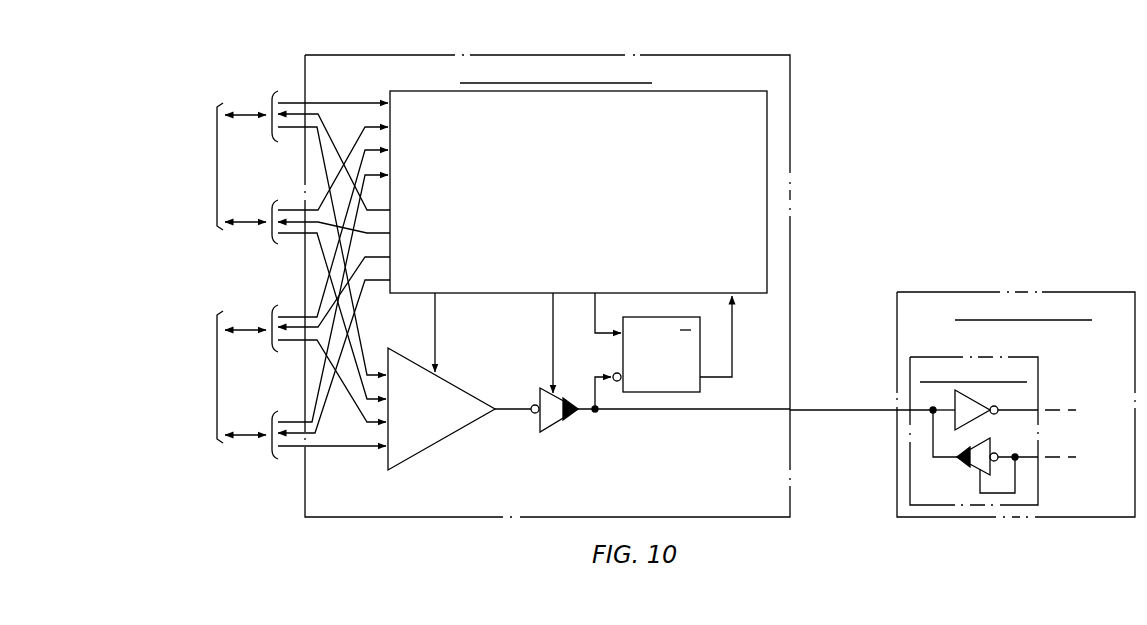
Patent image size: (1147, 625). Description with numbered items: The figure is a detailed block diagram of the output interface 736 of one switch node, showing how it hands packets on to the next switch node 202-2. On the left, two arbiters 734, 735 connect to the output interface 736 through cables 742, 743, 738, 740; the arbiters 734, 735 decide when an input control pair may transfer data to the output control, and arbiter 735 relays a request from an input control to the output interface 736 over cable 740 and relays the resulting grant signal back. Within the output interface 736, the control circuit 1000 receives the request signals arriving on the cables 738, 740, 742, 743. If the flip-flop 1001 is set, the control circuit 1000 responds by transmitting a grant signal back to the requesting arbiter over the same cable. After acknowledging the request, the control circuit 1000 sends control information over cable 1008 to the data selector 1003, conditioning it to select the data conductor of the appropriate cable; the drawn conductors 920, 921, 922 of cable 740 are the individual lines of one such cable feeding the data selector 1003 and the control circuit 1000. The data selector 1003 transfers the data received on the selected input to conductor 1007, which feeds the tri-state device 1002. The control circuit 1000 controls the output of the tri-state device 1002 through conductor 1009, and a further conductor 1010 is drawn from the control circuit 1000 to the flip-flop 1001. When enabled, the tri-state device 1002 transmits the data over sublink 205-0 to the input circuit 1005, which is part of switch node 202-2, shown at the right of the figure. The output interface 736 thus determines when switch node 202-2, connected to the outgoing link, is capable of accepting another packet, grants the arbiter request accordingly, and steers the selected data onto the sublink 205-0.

The output interface 736 is at (588, 55).
The control circuit 1000 is at (677, 91).
The arbiter 734 is at (174, 166).
The arbiter 735 is at (174, 377).
The cable 742 is at (245, 102).
The cable 743 is at (245, 218).
The cable 738 is at (245, 320).
The cable 740 is at (245, 430).
The request line 920 is at (285, 415).
The grant line 921 is at (322, 425).
The data line 922 is at (285, 450).
The data selector 1003 is at (433, 442).
The cable 1008 is at (437, 318).
The conductor 1009 is at (548, 352).
The conductor 1007 is at (510, 412).
The tri-state device 1002 is at (550, 425).
The flip-flop 1001 is at (700, 392).
The reset line 1010 is at (597, 306).
The sublink 205-0 is at (842, 410).
The switch node 202-2 is at (1043, 292).
The input circuit 1005 is at (995, 357).